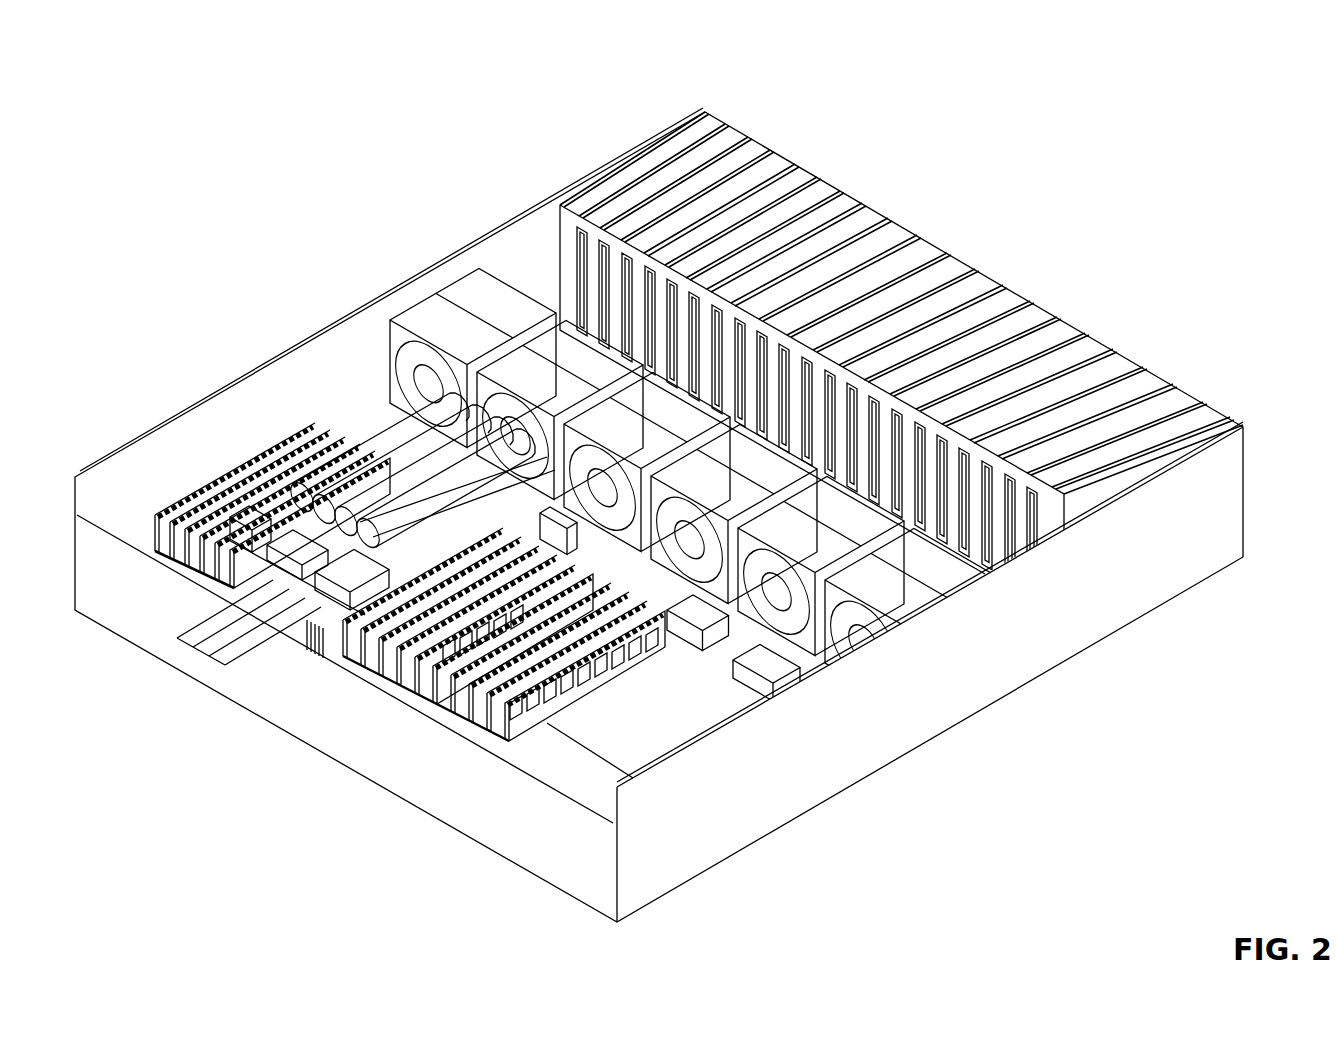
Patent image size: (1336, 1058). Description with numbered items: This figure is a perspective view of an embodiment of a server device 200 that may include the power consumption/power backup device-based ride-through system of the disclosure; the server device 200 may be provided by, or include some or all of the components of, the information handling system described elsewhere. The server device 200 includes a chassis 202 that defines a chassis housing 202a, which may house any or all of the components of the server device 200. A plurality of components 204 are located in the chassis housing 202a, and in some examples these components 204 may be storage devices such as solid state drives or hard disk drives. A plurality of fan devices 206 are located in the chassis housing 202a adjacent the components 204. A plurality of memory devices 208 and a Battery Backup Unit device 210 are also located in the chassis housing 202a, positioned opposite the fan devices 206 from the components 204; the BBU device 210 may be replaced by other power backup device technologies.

The server device 200 is at (1152, 162).
The chassis 202 is at (705, 110).
The chassis housing 202a is at (285, 378).
The components 204 is at (813, 183).
The fan devices 206 is at (490, 307).
The memory devices 208 is at (185, 485).
The Battery Backup Unit (BBU) device 210 is at (363, 457).